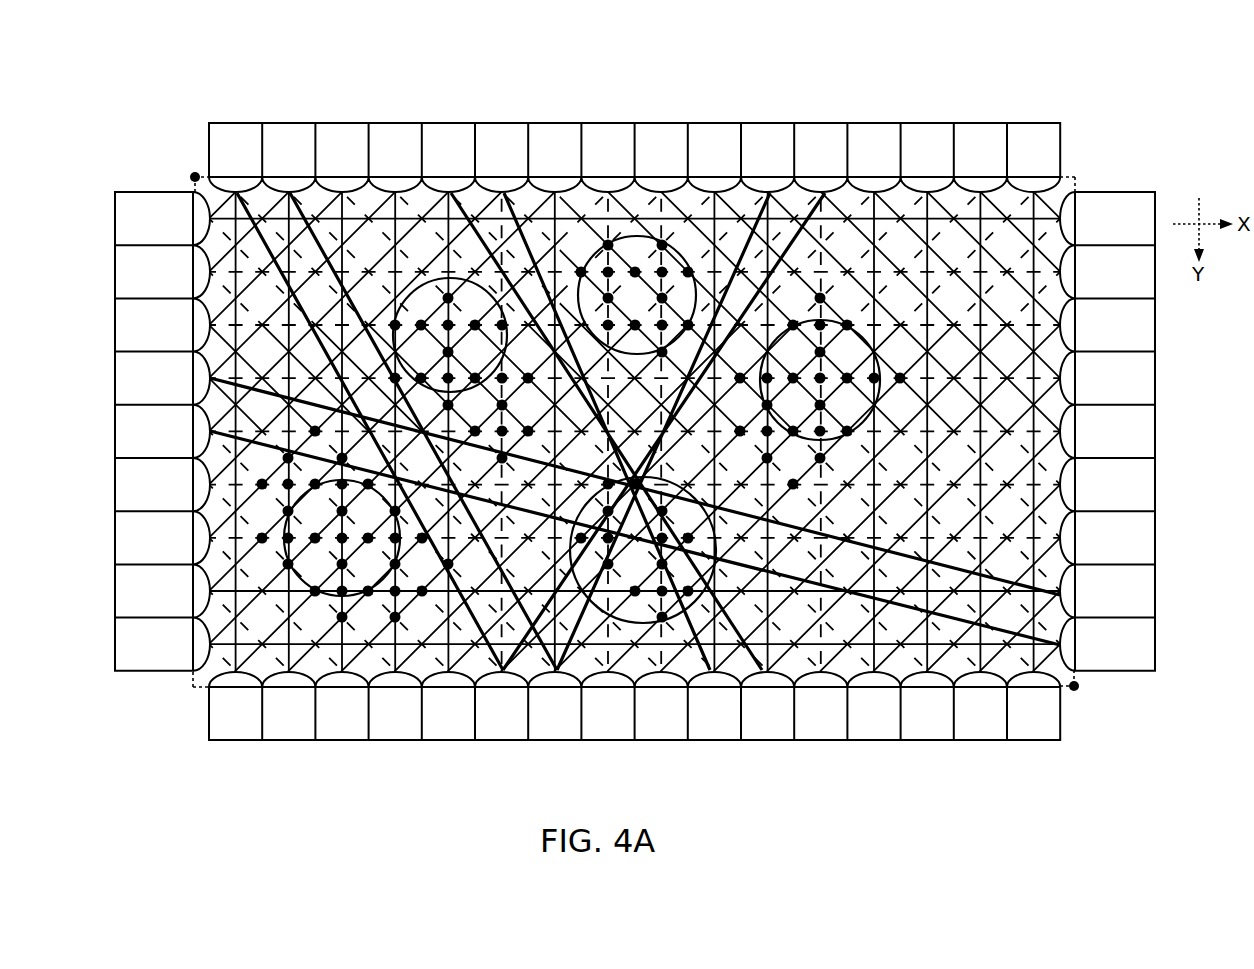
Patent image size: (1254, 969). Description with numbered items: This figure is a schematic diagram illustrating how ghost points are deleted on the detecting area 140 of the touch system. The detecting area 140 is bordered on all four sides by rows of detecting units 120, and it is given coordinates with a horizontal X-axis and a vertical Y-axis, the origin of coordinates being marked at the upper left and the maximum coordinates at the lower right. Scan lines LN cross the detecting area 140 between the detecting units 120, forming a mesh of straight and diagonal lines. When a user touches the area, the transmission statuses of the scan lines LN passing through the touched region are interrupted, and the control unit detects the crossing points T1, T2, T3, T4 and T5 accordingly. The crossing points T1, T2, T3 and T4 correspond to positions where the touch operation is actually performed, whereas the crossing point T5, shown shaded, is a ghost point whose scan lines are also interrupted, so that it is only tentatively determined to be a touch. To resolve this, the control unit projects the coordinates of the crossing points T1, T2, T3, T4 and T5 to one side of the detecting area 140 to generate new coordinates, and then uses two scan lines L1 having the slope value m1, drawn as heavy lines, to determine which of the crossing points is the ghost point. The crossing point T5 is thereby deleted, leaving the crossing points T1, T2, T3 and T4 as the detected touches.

The detecting units 120 is at (635, 431).
The detecting area 140 is at (1076, 177).
The scan lines LN is at (212, 672).
The scan lines having slope value m1 L1 is at (768, 190).
The crossing point T1 is at (508, 295).
The crossing point T2 is at (636, 237).
The crossing point T3 is at (825, 322).
The crossing point T4 is at (326, 605).
The crossing point (ghost point G1) T5 is at (665, 645).